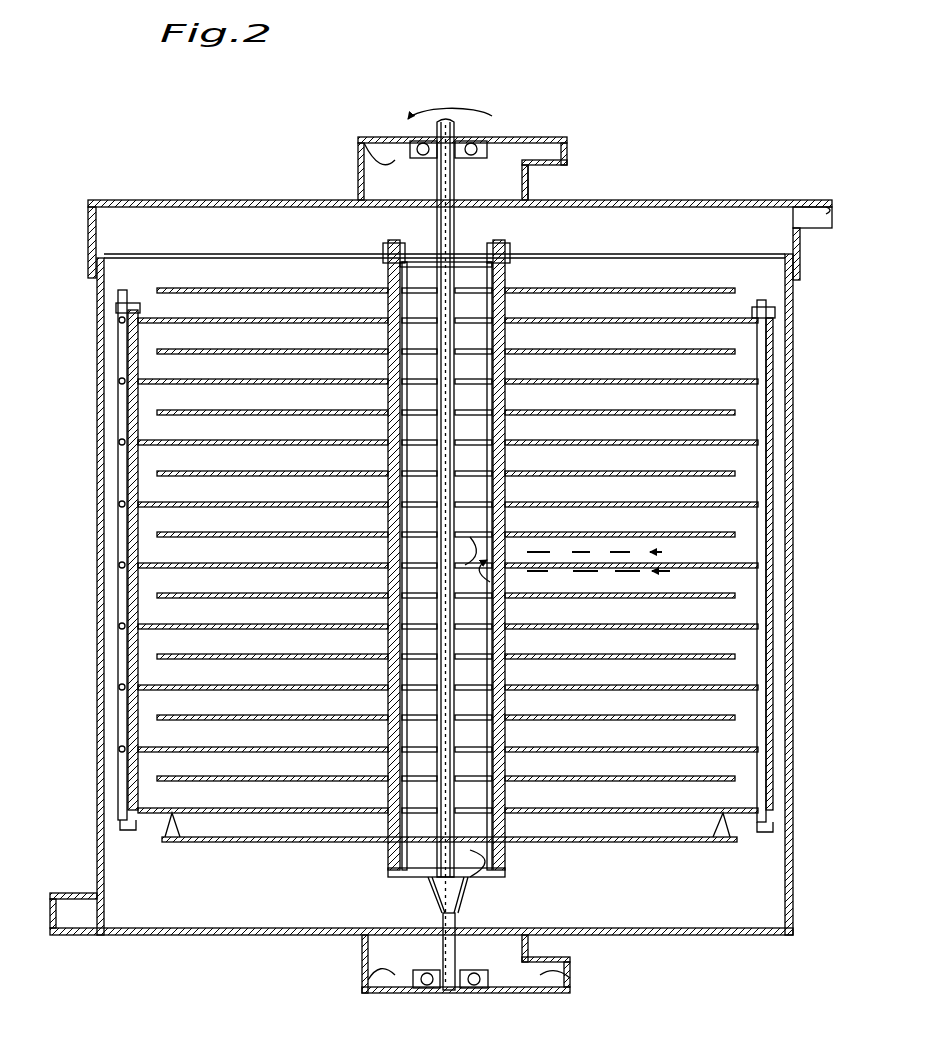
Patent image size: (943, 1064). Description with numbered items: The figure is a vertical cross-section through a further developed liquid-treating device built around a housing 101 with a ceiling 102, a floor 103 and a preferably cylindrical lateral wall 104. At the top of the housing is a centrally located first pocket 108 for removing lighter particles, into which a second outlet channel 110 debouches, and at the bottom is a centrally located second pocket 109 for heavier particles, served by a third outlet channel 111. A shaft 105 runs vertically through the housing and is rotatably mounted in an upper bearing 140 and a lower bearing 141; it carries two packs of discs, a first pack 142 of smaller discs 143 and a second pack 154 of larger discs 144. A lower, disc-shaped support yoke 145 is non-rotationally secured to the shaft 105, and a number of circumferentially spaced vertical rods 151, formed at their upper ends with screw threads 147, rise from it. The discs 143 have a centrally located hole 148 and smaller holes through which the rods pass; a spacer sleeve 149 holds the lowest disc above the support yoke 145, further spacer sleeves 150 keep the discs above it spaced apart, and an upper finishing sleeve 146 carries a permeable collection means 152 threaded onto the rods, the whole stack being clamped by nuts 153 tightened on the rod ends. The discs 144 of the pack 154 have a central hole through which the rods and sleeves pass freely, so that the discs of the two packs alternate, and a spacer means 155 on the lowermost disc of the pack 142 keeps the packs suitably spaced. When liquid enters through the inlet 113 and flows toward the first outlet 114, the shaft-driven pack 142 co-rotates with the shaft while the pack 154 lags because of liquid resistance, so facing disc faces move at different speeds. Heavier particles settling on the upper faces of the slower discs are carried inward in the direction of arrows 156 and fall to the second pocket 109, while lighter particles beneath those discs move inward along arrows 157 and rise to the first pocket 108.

The housing 101 is at (652, 205).
The ceiling 102 is at (208, 206).
The floor 103 is at (265, 930).
The lateral wall 104 is at (100, 520).
The shaft 105 is at (456, 188).
The first pocket 108 is at (368, 140).
The second pocket 109 is at (368, 987).
The second outlet channel 110 is at (567, 152).
The third outlet channel 111 is at (570, 988).
The inlet 113 is at (830, 206).
The first outlet 114 is at (52, 913).
The upper bearing 140 is at (462, 120).
The lower bearing 141 is at (488, 986).
The pack 142 is at (650, 843).
The discs 143 is at (700, 843).
The discs 144 is at (700, 812).
The support yoke 145 is at (483, 878).
The upper finishing sleeve 146 is at (512, 266).
The screw threads 147 is at (502, 248).
The centrally located hole 148 is at (432, 880).
The spacer sleeve 149 is at (400, 850).
The spacer sleeves 150 is at (388, 842).
The vertical rods 151 is at (386, 266).
The permeable collection means 152 is at (423, 258).
The nuts 153 is at (386, 250).
The pack 154 is at (163, 688).
The spacer means 155 is at (726, 828).
The arrows 156 is at (662, 553).
The arrows 157 is at (668, 571).